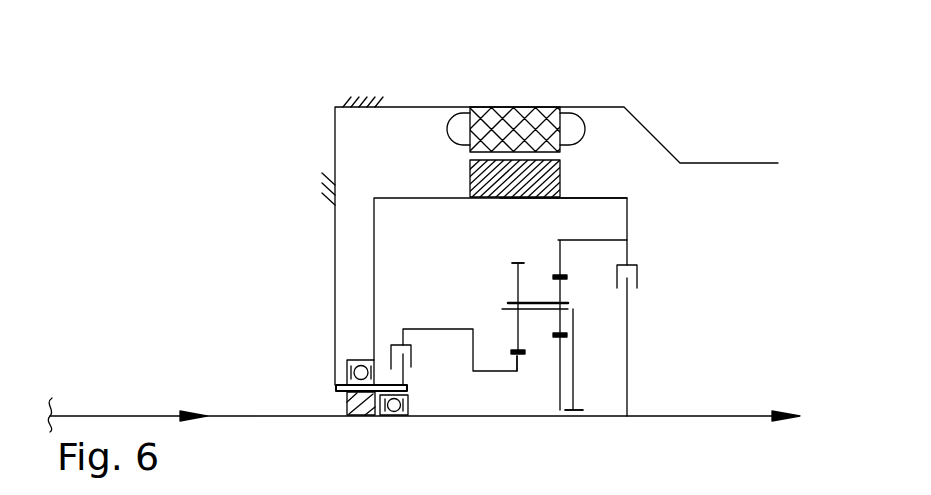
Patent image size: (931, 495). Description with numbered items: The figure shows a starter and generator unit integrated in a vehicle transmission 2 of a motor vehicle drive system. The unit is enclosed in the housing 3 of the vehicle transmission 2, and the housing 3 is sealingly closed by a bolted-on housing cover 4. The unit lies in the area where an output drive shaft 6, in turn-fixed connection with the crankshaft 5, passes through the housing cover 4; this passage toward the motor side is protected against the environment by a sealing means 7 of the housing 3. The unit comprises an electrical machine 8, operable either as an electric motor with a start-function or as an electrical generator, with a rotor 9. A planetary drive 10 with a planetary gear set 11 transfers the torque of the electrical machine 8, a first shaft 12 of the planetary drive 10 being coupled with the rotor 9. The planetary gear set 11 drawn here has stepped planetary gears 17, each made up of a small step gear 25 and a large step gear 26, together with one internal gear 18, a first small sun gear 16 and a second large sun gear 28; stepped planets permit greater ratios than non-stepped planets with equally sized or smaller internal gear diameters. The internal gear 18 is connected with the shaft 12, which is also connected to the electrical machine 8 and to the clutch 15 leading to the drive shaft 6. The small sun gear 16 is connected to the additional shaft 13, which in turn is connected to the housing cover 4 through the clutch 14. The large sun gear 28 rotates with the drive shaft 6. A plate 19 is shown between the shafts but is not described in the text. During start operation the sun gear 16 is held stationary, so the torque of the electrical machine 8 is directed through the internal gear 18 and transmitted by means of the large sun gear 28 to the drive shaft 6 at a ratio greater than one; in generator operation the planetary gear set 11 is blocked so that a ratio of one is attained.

The vehicle transmission 2 is at (775, 377).
The housing 3 is at (733, 163).
The housing cover 4 is at (335, 140).
The crankshaft 5 is at (124, 414).
The drive shaft 6 is at (463, 417).
The sealing means 7 is at (575, 188).
The electrical machine 8 is at (537, 124).
The rotor 9 is at (468, 176).
The planetary drive 10 is at (362, 262).
The planetary gear set 11 is at (552, 248).
The first shaft 12 is at (632, 198).
The additional shaft 13 is at (426, 329).
The clutch 14 is at (413, 355).
The additional clutch 15 is at (637, 275).
The small sun gear 16 is at (521, 363).
The stepped planetary gears 17 is at (516, 277).
The internal gear 18 is at (562, 279).
The disk 19 is at (568, 306).
The small step gear 25 is at (574, 353).
The large step gear 26 is at (513, 262).
The large sun gear 28 is at (562, 388).